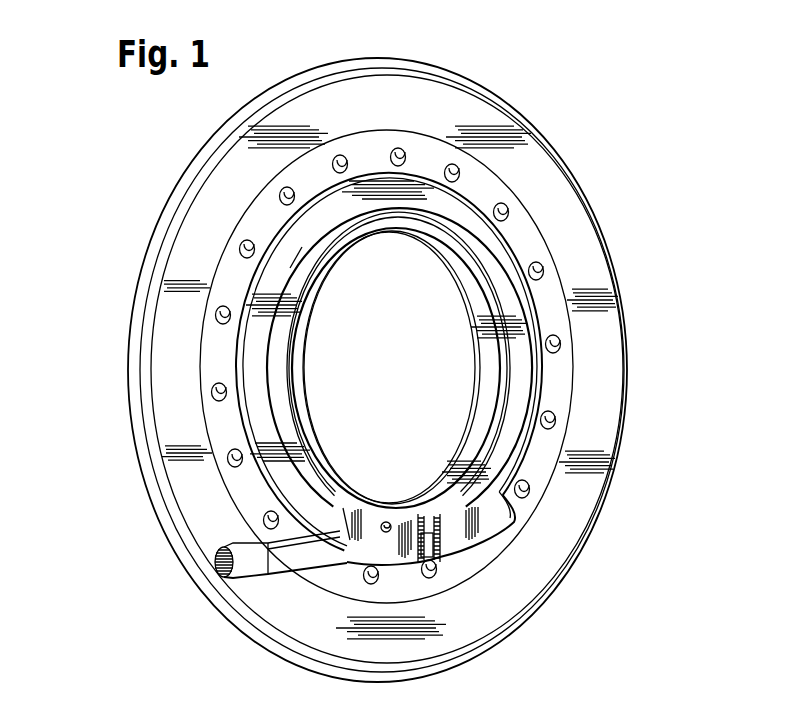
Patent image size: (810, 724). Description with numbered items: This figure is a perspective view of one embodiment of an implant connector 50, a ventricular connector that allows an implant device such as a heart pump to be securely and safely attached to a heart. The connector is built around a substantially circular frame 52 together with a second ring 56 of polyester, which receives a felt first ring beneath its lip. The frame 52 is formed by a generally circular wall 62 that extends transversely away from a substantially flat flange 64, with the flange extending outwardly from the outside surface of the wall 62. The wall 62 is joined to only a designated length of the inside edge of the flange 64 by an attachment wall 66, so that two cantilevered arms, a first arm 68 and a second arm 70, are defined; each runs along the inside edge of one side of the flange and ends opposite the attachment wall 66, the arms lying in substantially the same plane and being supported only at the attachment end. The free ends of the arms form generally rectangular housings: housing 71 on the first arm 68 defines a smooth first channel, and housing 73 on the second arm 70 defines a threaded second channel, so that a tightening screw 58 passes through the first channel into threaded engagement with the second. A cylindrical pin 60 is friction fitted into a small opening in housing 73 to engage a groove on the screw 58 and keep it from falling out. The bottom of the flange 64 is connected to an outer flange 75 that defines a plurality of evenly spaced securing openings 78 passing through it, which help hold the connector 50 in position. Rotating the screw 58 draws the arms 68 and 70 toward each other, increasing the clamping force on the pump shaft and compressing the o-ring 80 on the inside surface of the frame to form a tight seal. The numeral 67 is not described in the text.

The implant connector 50 is at (98, 432).
The frame 52 is at (536, 520).
The second ring 56 is at (213, 563).
The tightening screw 58 is at (288, 557).
The pin 60 is at (386, 521).
The wall 62 is at (500, 257).
The flange 64 is at (447, 202).
The attachment wall 66 is at (363, 203).
The boss face 67 is at (262, 338).
The first arm 68 is at (272, 375).
The second arm 70 is at (540, 390).
The housing 71 is at (373, 540).
The housing 73 is at (496, 523).
The outer flange 75 is at (328, 150).
The securing openings 78 is at (546, 270).
The o-ring 80 is at (492, 349).